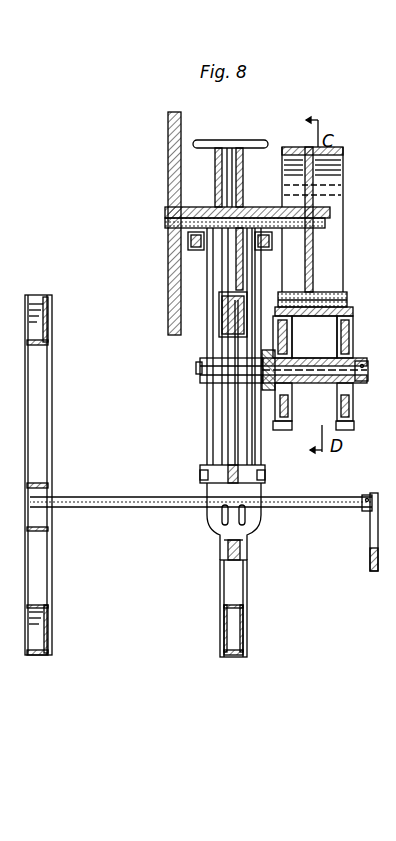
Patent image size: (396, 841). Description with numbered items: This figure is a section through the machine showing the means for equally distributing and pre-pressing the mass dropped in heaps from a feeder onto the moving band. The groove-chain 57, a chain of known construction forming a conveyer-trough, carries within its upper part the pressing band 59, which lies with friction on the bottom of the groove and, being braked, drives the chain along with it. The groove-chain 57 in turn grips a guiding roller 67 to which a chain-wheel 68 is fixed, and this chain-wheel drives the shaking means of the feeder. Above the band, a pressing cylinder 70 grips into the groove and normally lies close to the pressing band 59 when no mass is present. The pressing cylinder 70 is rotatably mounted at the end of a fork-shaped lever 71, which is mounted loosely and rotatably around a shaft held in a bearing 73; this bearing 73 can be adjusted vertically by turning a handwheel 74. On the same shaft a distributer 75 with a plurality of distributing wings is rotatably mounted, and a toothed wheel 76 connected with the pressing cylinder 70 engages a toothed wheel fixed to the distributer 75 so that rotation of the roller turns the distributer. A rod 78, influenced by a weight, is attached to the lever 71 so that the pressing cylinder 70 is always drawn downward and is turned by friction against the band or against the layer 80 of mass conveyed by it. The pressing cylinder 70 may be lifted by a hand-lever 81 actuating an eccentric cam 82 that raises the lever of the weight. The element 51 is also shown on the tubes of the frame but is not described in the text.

The tube 51 is at (50, 343).
The groove-chain 57 is at (348, 298).
The pressing band 59 is at (314, 337).
The guiding roller 67 is at (340, 407).
The chain-wheel 68 is at (250, 418).
The pressing cylinder 70 is at (343, 170).
The fork-shaped lever 71 is at (193, 250).
The bearing 73 is at (213, 262).
The handwheel 74 is at (221, 140).
The distributer 75 is at (293, 186).
The toothed wheel 76 is at (168, 137).
The rod 78 is at (207, 446).
The layer of mass 80 is at (325, 292).
The hand-lever 81 is at (370, 545).
The eccentric cam 82 is at (242, 549).